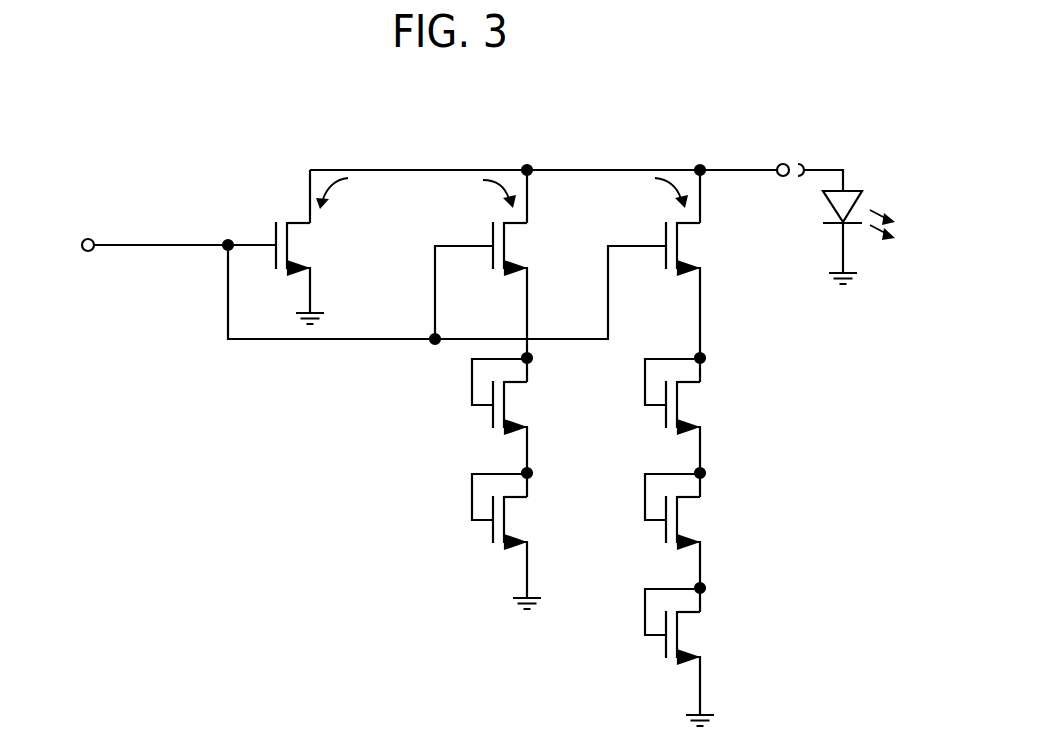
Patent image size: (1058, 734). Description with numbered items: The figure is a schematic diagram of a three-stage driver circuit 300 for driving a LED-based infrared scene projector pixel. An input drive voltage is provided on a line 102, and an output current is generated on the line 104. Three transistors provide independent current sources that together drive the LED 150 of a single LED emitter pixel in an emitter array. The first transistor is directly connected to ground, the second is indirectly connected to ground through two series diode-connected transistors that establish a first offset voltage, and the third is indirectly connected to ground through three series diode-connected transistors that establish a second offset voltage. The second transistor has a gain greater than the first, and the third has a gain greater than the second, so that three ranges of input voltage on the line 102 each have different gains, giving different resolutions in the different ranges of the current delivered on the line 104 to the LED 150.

The three-stage driver circuit 300 is at (246, 117).
The line 102 is at (175, 243).
The line 104 is at (406, 168).
The LED 150 is at (855, 185).